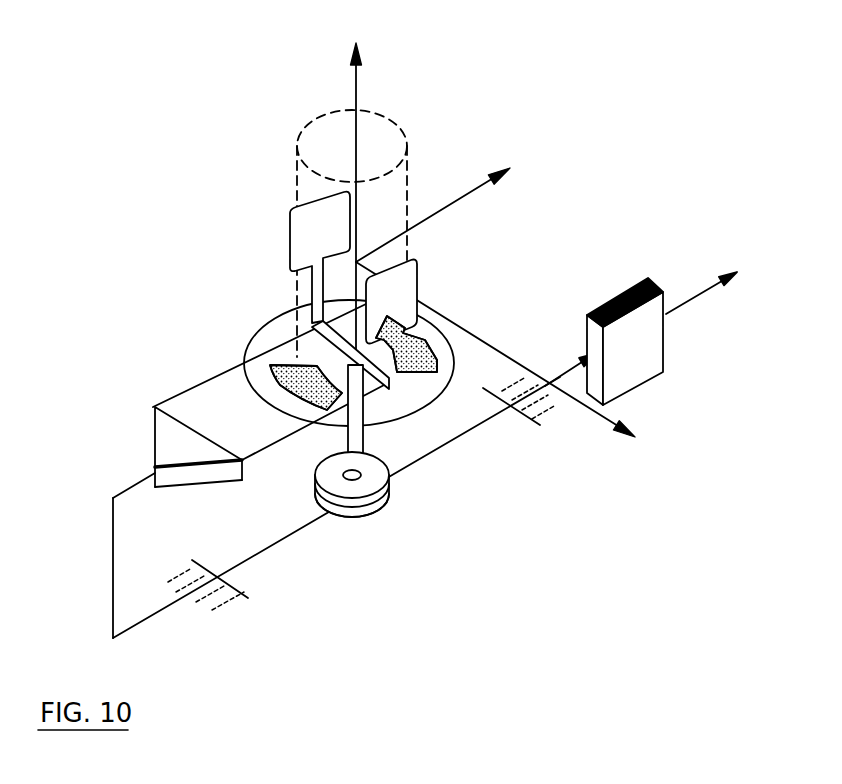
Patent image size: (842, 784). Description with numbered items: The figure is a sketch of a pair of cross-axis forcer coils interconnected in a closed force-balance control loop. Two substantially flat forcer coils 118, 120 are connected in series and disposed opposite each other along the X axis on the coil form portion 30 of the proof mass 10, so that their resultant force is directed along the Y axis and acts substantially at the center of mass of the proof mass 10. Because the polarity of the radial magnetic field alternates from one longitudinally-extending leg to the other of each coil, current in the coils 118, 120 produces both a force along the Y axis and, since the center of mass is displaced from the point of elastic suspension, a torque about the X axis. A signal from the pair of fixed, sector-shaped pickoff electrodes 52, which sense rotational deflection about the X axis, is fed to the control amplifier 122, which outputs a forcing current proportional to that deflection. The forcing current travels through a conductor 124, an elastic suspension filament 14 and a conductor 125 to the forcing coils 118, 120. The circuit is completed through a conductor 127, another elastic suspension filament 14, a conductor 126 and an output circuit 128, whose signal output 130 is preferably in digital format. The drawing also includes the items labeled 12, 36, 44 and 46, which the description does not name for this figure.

The proof mass 10 is at (411, 130).
The support / ground 12 is at (520, 416).
The elastic suspension filament 14 is at (472, 432).
The coil form portion 30 is at (296, 185).
The circular path of rotation 36 is at (283, 333).
The rotating disk 44 is at (378, 466).
The disk rim 46 is at (380, 504).
The sector-shaped pickoff electrodes 52 is at (440, 318).
The forcer coil 118 is at (418, 272).
The forcer coil 120 is at (290, 232).
The control amplifier 122 is at (186, 450).
The conductor 124 is at (112, 558).
The conductor 125 is at (346, 446).
The conductor 126 is at (558, 368).
The conductor 127 is at (362, 407).
The output circuit 128 is at (614, 302).
The signal output 130 is at (676, 312).